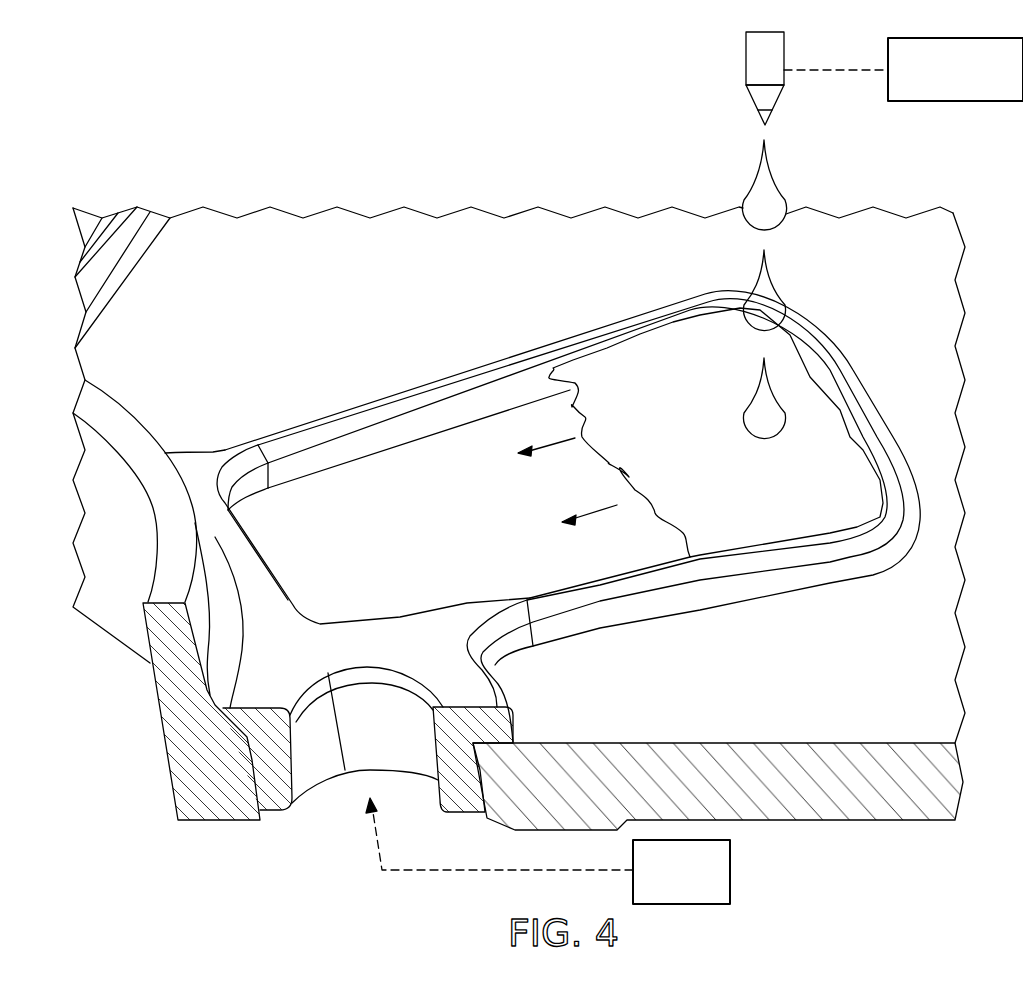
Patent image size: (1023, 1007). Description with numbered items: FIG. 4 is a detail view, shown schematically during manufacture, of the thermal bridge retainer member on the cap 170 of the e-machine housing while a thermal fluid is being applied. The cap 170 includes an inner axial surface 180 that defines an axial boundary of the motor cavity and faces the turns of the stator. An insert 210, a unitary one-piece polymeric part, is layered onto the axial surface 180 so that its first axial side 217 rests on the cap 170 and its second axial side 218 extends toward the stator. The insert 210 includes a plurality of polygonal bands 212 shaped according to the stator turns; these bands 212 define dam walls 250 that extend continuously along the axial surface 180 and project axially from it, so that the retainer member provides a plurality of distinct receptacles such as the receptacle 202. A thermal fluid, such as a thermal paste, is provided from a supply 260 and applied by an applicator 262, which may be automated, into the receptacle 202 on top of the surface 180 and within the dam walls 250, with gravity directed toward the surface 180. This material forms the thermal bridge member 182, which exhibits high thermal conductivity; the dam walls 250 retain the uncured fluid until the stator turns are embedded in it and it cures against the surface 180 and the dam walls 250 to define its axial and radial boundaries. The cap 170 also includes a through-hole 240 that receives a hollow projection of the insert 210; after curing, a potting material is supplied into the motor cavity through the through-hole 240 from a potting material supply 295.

The cap 170 is at (913, 670).
The axial surface 180 is at (401, 551).
The thermal bridge member 182 is at (643, 338).
The receptacle 202 is at (420, 455).
The insert 210 is at (506, 356).
The bands 212 is at (440, 377).
The first axial side 217 is at (295, 483).
The second axial side 218 is at (212, 452).
The through-hole 240 is at (483, 793).
The dam walls 250 is at (338, 450).
The supply 260 is at (955, 102).
The applicator 262 is at (745, 63).
The potting material supply 295 is at (730, 875).